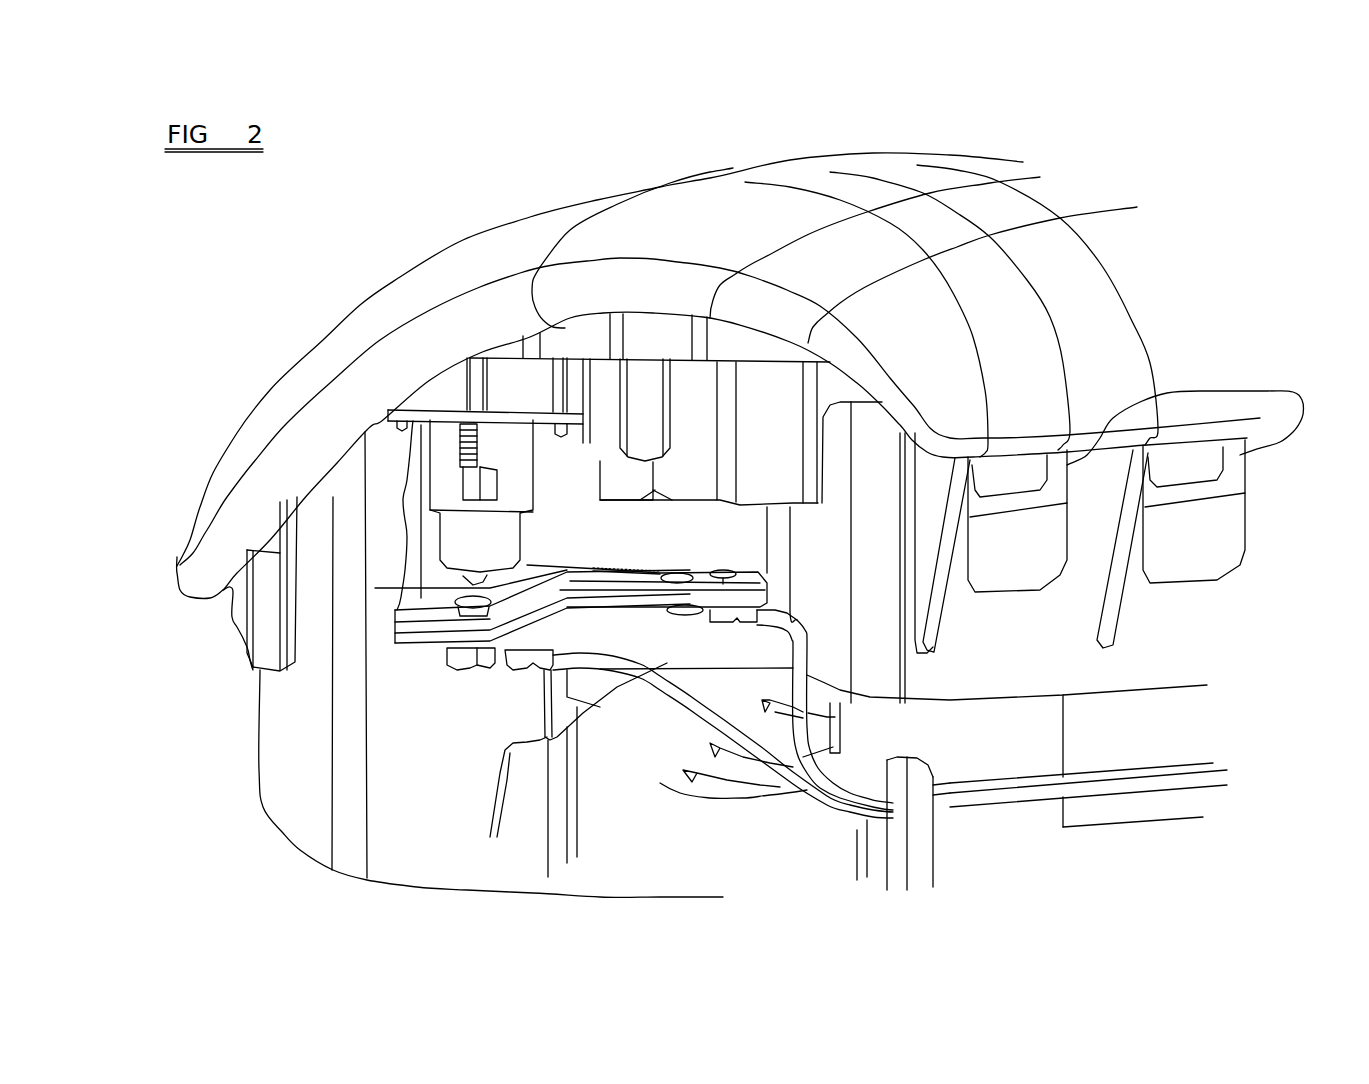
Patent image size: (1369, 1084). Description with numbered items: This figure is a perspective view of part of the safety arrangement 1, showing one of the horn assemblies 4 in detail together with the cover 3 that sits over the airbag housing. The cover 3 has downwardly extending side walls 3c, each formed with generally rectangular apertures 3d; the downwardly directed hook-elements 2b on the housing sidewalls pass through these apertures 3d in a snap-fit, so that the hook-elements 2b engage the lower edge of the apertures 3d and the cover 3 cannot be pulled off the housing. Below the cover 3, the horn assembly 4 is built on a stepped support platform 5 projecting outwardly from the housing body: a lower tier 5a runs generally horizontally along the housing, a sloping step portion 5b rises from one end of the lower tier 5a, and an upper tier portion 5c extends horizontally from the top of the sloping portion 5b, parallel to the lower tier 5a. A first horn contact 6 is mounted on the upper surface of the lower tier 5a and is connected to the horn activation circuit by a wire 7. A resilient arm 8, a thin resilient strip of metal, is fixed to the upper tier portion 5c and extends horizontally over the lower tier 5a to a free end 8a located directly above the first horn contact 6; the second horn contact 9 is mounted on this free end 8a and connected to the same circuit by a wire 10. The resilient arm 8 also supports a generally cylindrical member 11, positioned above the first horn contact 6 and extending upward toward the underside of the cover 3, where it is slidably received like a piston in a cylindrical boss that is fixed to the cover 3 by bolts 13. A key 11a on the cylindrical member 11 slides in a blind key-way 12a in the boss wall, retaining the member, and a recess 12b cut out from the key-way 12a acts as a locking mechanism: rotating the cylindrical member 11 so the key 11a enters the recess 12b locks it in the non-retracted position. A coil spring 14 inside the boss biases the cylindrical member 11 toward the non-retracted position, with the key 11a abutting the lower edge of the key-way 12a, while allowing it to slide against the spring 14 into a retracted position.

The safety arrangement 1 is at (255, 330).
The hook-elements 2b is at (1043, 567).
The cover 3 is at (910, 153).
The side walls 3c is at (1163, 612).
The apertures 3d is at (1347, 398).
The horn assembly 4 is at (250, 693).
The stepped support platform 5 is at (427, 623).
The lower tier 5a is at (420, 622).
The sloping step portion 5b is at (545, 592).
The upper tier portion 5c is at (663, 588).
The first horn contact 6 is at (460, 616).
The wire 7 is at (770, 767).
The resilient arm 8 is at (567, 582).
The free end 8a is at (457, 570).
The second horn contact 9 is at (250, 585).
The wire 10 is at (833, 803).
The cylindrical member 11 is at (463, 540).
The key 11a is at (463, 490).
The blind key-way 12a is at (447, 487).
The recess 12b is at (497, 597).
The bolts 13 is at (565, 424).
The coil spring 14 is at (460, 466).